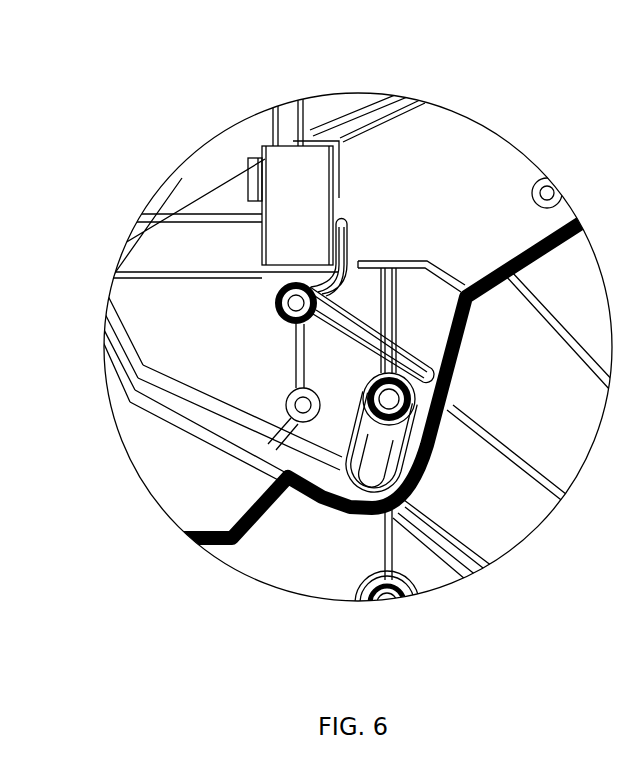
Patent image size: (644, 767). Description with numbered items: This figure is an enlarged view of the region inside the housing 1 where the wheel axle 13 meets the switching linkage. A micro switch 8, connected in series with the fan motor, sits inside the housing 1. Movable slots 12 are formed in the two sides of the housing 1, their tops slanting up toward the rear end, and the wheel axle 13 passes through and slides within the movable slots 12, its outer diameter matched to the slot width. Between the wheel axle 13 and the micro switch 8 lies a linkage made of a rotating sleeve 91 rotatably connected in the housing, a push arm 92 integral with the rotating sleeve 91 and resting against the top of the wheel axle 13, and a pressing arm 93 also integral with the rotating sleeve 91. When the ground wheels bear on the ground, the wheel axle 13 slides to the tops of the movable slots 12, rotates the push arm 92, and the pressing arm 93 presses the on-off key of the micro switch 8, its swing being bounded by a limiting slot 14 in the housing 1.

The housing 1 is at (460, 172).
The micro switch 8 is at (290, 178).
The movable slot 12 is at (368, 468).
The wheel axle 13 is at (407, 418).
The limiting slot 14 is at (359, 262).
The rotating sleeve 91 is at (275, 298).
The push arm 92 is at (372, 370).
The pressing arm 93 is at (336, 248).